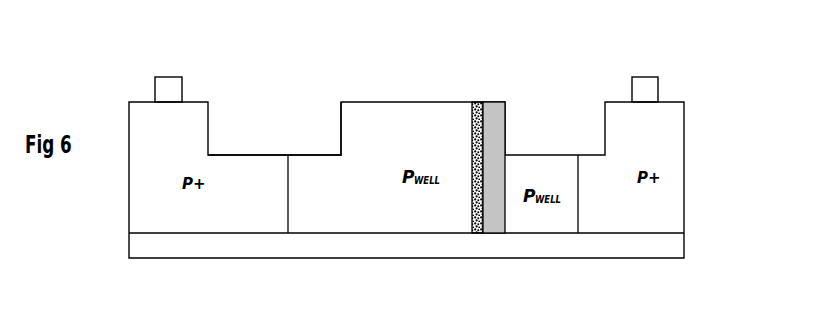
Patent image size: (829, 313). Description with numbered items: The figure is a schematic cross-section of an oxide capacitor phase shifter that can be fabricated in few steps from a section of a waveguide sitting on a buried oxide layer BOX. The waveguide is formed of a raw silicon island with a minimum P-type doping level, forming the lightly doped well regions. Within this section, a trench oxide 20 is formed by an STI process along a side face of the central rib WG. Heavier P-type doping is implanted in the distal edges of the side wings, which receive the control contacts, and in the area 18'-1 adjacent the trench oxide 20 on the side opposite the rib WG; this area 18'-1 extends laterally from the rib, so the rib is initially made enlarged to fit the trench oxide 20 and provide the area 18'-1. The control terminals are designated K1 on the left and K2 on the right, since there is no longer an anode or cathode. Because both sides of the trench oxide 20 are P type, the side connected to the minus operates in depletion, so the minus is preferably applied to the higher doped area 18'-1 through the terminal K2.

The trench oxide 20 is at (472, 113).
The P+ doped area 18'-1 is at (517, 130).
The left control terminal K1 is at (170, 77).
The right control terminal K2 is at (650, 77).
The rib WG is at (388, 130).
The buried oxide layer BOX is at (406, 245).